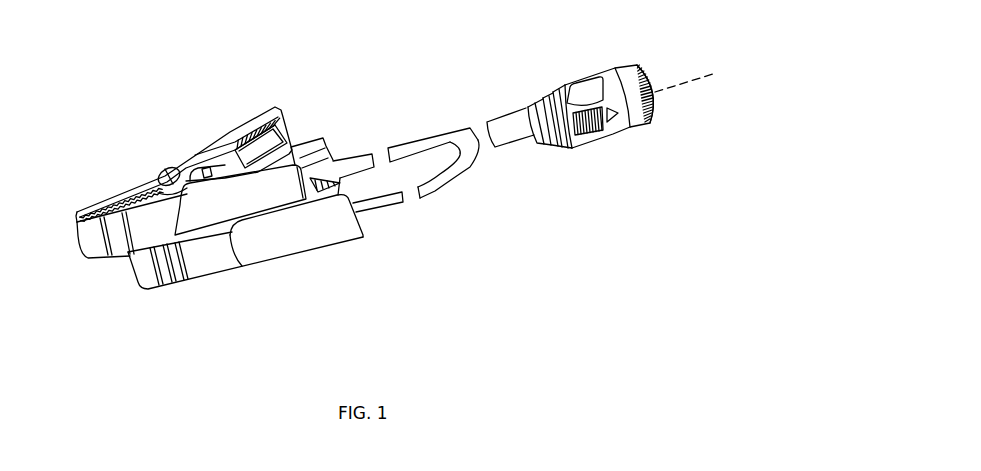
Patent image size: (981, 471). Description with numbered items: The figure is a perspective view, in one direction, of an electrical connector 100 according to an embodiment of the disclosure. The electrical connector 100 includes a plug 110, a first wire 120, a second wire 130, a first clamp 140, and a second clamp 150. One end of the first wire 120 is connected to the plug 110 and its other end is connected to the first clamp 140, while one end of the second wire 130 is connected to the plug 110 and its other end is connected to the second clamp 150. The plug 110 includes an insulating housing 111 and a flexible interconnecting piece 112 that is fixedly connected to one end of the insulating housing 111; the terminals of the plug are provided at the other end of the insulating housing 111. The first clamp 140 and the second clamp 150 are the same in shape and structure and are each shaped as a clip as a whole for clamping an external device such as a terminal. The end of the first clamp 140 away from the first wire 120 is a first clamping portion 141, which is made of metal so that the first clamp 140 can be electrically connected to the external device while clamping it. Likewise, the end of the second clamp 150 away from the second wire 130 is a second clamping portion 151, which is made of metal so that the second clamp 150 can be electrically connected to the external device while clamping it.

The electrical connector 100 is at (90, 28).
The plug 110 is at (671, 163).
The insulating housing 111 is at (653, 129).
The flexible interconnecting piece 112 is at (578, 148).
The first wire 120 is at (436, 194).
The second wire 130 is at (432, 138).
The first clamp 140 is at (199, 275).
The first clamping portion 141 is at (152, 283).
The second clamp 150 is at (190, 145).
The second clamping portion 151 is at (85, 204).